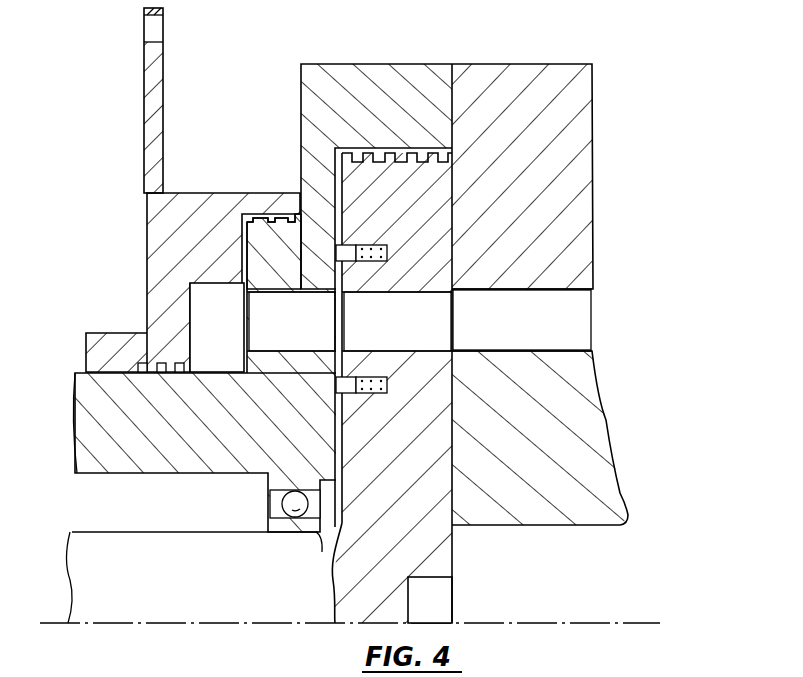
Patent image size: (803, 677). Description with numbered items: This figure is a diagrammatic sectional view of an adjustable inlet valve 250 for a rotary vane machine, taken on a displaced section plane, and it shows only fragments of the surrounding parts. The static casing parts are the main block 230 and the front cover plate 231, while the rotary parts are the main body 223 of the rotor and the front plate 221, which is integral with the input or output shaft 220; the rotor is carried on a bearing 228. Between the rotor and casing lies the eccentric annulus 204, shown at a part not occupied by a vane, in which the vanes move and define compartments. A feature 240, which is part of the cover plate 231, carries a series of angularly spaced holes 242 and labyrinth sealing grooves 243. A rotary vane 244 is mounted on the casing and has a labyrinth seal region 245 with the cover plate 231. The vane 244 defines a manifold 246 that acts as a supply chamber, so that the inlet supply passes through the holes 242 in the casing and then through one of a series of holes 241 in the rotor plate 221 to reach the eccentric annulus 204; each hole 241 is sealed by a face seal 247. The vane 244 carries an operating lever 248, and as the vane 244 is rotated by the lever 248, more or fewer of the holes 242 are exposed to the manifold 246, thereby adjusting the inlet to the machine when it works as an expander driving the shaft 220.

The eccentric annulus 204 is at (522, 320).
The input or output shaft 220 is at (170, 614).
The front plate 221 is at (445, 555).
The main body 223 is at (596, 505).
The bearing 228 is at (272, 502).
The main block 230 is at (593, 115).
The front cover plate 231 is at (301, 113).
The feature 240 is at (273, 238).
The holes 241 is at (397, 252).
The holes 242 is at (205, 373).
The labyrinth sealing grooves 243 is at (257, 218).
The rotary vane 244 is at (150, 207).
The labyrinth seal region 245 is at (144, 364).
The manifold 246 is at (217, 327).
The face seal 247 is at (336, 385).
The operating lever 248 is at (160, 92).
The adjustable inlet valve 250 is at (126, 262).